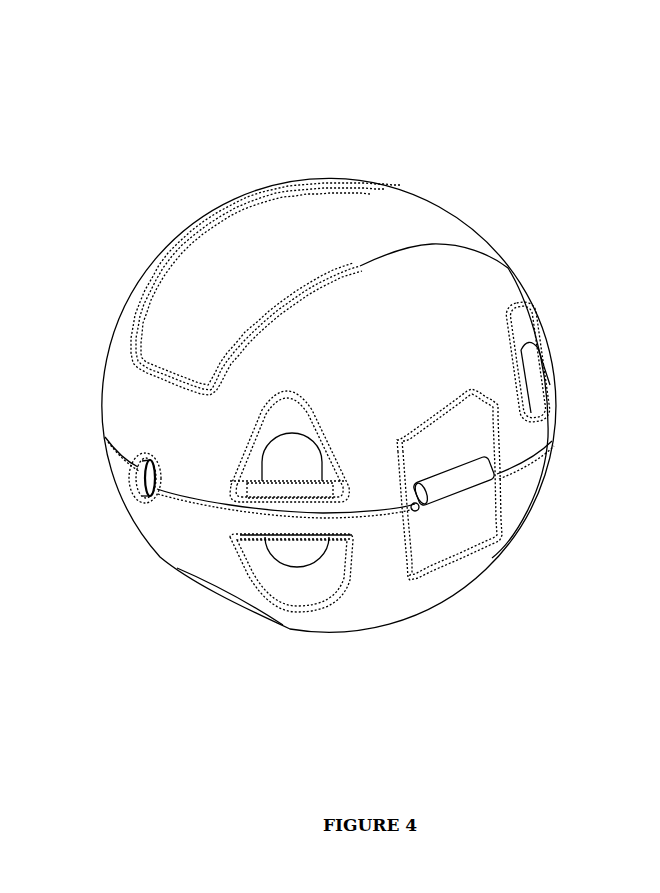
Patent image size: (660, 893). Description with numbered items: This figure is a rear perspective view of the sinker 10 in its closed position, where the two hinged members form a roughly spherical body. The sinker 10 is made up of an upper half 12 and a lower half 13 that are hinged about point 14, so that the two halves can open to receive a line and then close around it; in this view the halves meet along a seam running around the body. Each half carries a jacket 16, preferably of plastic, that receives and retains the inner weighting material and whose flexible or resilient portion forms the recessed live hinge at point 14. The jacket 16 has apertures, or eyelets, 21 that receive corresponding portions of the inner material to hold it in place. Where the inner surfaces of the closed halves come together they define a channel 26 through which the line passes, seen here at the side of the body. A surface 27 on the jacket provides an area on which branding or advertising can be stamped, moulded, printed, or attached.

The sinker 10 is at (520, 145).
The upper half 12 is at (131, 216).
The lower half 13 is at (521, 642).
The hinge point 14 is at (455, 518).
The jacket 16 is at (357, 336).
The apertures (eyelets) 21 is at (312, 541).
The channel 26 is at (135, 488).
The surface 27 is at (303, 210).